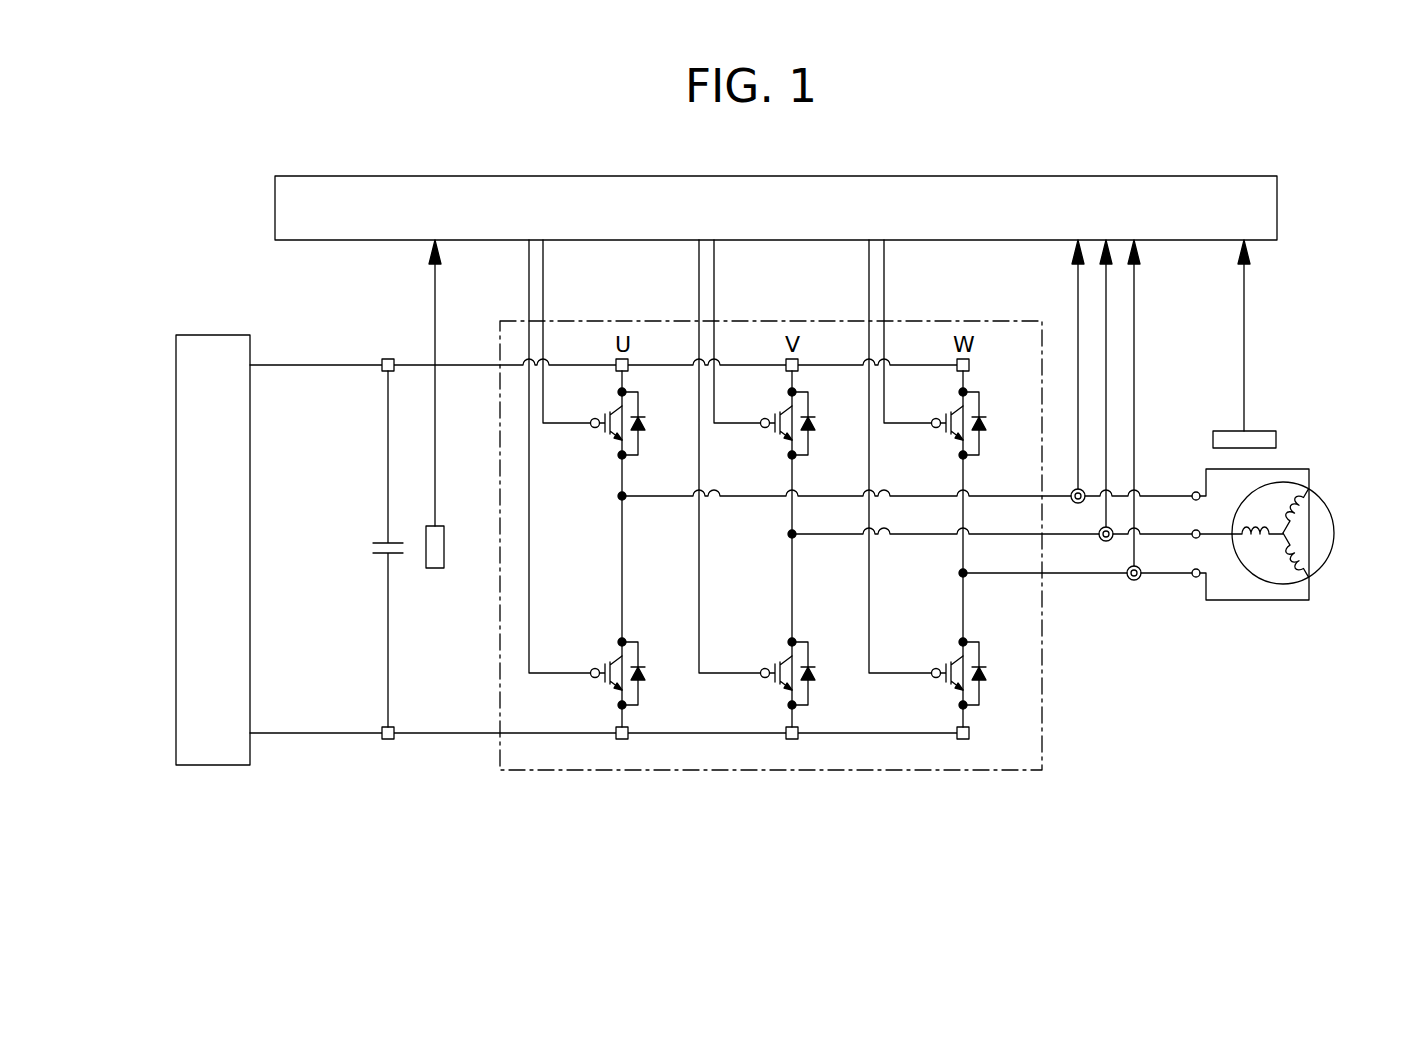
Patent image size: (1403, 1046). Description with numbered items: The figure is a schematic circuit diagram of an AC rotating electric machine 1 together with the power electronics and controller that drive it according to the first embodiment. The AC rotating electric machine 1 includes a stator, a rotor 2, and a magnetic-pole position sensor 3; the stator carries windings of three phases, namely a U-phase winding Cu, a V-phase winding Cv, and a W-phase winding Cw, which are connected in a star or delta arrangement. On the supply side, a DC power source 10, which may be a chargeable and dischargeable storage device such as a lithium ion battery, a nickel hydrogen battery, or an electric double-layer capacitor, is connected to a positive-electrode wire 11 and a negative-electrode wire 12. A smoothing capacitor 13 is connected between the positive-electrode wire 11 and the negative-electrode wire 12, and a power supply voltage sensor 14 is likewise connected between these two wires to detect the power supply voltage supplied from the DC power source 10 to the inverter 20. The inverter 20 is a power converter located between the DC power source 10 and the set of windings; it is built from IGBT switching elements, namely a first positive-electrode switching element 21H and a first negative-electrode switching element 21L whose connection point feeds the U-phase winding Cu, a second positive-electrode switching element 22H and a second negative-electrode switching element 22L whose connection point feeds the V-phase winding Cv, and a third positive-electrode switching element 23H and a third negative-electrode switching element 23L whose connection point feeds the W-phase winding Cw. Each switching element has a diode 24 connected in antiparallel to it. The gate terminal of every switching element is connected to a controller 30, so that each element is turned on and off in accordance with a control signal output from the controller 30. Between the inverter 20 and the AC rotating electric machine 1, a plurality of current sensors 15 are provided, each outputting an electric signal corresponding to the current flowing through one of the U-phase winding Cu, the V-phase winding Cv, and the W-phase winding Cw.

The AC rotating electric machine 1 is at (1291, 563).
The rotor 2 is at (1270, 563).
The magnetic-pole position sensor 3 is at (1268, 430).
The DC power source 10 is at (176, 447).
The positive-electrode wire 11 is at (465, 362).
The negative-electrode wire 12 is at (442, 735).
The smoothing capacitor 13 is at (395, 542).
The power supply voltage sensor 14 is at (445, 537).
The current sensors 15 is at (1135, 580).
The inverter 20 is at (738, 772).
The first positive-electrode switching element 21H is at (603, 414).
The first negative-electrode switching element 21L is at (603, 664).
The second positive-electrode switching element 22H is at (773, 414).
The second negative-electrode switching element 22L is at (773, 664).
The third positive-electrode switching element 23H is at (944, 414).
The third negative-electrode switching element 23L is at (944, 664).
The diodes 24 is at (644, 417).
The controller 30 is at (985, 176).
The U-phase winding Cu is at (1303, 514).
The V-phase winding Cv is at (1253, 523).
The W-phase winding Cw is at (1290, 570).